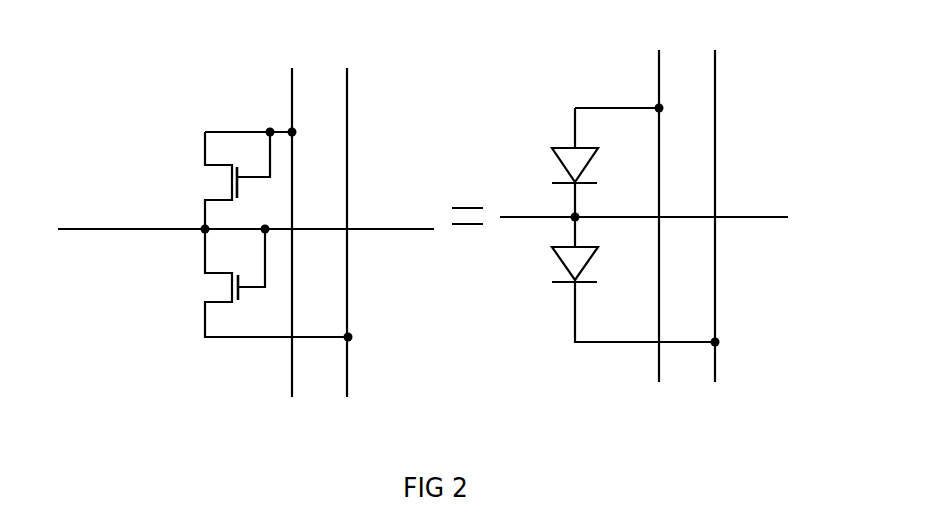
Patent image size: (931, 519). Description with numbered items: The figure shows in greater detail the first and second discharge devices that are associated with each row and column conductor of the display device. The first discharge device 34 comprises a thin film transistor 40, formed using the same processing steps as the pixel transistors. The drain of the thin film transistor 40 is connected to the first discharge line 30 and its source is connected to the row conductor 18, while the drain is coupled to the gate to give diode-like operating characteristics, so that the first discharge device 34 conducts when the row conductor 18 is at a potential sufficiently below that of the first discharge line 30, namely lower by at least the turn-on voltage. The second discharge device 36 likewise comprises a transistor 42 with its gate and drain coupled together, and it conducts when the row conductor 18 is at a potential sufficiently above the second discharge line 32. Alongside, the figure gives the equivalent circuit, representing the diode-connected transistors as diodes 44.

The row conductor 18 is at (204, 229).
The first discharge line 30 is at (292, 108).
The second discharge line 32 is at (347, 182).
The first discharge device 34 is at (189, 149).
The second discharge device 36 is at (217, 298).
The thin film transistor 40 is at (220, 130).
The transistor 42 is at (222, 302).
The diodes 44 is at (558, 166).